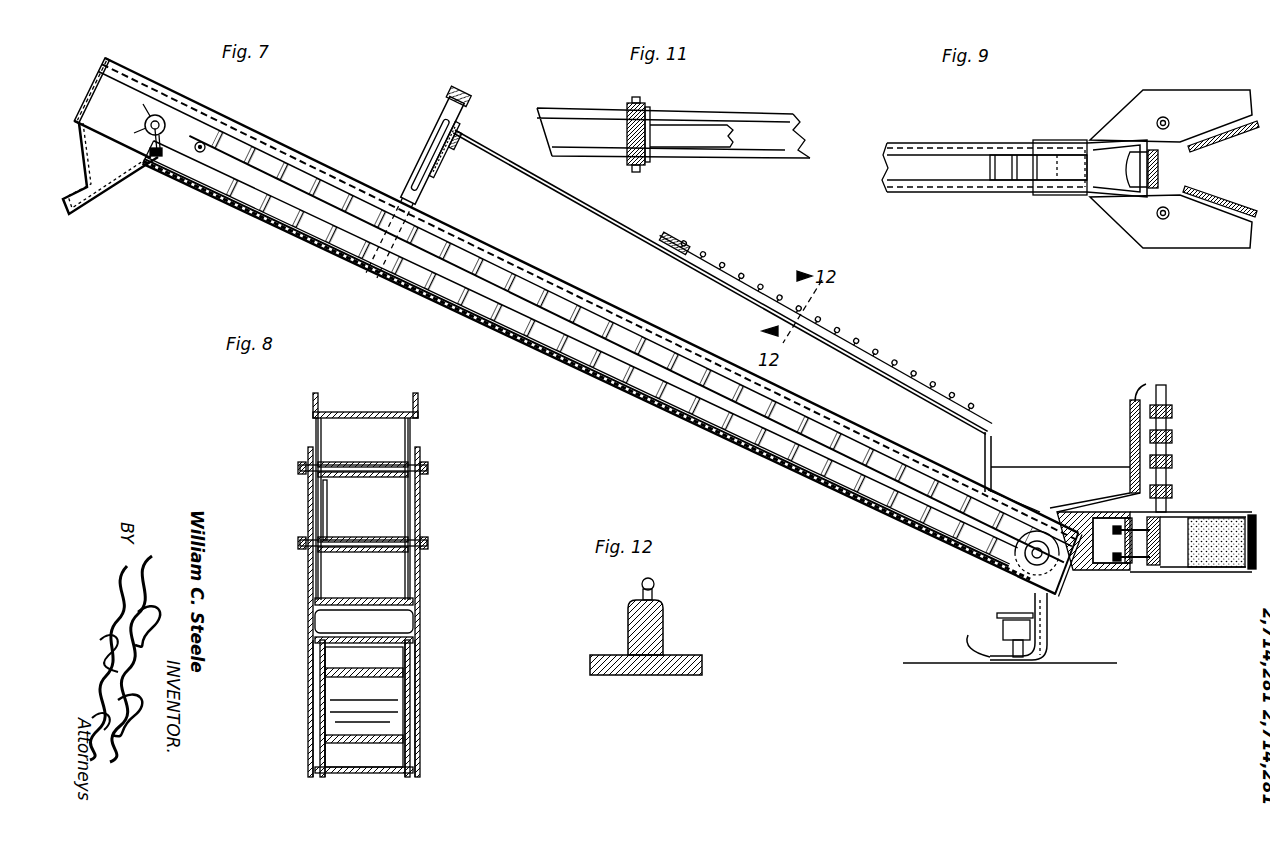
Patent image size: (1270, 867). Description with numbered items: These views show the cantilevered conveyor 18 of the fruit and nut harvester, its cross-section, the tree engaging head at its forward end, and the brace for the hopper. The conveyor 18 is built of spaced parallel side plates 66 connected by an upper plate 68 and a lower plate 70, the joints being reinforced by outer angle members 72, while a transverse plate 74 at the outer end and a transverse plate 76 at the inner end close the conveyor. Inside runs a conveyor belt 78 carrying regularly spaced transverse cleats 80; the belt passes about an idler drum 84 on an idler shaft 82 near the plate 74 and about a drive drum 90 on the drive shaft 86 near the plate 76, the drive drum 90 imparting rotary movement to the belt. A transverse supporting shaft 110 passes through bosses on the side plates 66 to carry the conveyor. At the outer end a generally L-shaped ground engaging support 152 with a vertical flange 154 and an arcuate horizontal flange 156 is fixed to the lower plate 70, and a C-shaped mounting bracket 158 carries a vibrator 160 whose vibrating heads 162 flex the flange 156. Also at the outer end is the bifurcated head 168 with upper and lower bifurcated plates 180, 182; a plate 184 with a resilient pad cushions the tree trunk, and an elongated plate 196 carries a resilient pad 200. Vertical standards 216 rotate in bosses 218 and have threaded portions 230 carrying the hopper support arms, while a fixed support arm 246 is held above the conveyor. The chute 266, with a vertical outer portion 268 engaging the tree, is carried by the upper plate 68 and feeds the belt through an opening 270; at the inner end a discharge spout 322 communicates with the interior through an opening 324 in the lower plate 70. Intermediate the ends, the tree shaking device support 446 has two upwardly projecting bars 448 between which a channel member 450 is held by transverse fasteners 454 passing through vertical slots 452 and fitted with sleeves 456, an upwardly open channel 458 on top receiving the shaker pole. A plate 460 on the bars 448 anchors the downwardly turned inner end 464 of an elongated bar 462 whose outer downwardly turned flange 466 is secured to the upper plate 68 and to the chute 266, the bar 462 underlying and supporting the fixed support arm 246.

In FIG. 7, the conveyor 18 is at (600, 384).
In FIG. 11, the conveyor 18 is at (780, 162).
In FIG. 9, the conveyor 18 is at (925, 197).
In FIG. 8, the side plates 66 is at (308, 700).
In FIG. 7, the upper plate 68 is at (868, 438).
In FIG. 8, the upper plate 68 is at (365, 637).
In FIG. 7, the lower plate 70 is at (862, 512).
In FIG. 8, the lower plate 70 is at (365, 774).
In FIG. 7, the outer angle members 72 is at (830, 414).
In FIG. 8, the outer angle members 72 is at (420, 788).
In FIG. 7, the transverse plate 74 is at (1060, 577).
In FIG. 7, the transverse plate 76 is at (90, 108).
In FIG. 7, the conveyor belt 78 is at (545, 343).
In FIG. 7, the transverse cleats 80 is at (668, 412).
In FIG. 7, the idler shaft 82 is at (1025, 560).
In FIG. 7, the idler drum 84 is at (1025, 548).
In FIG. 7, the drive shaft 86 is at (156, 158).
In FIG. 7, the drive drum 90 is at (146, 118).
In FIG. 7, the transverse supporting shaft 110 is at (206, 150).
In FIG. 7, the ground engaging support 152 is at (1052, 645).
In FIG. 7, the vertical flange 154 is at (1048, 626).
In FIG. 7, the arcuate horizontal flange 156 is at (1000, 660).
In FIG. 7, the mounting bracket 158 is at (1033, 614).
In FIG. 7, the vibrator 160 is at (1003, 630).
In FIG. 7, the vibrating head 162 is at (1020, 658).
In FIG. 9, the bifurcated head 168 is at (1128, 102).
In FIG. 7, the upper bifurcated plate 180 is at (1205, 512).
In FIG. 9, the upper bifurcated plate 180 is at (1190, 95).
In FIG. 7, the lower bifurcated plate 182 is at (1190, 572).
In FIG. 7, the plate 184 is at (1150, 568).
In FIG. 9, the plate 184 is at (1160, 168).
In FIG. 9, the elongated plate 196 is at (1228, 198).
In FIG. 7, the resilient pad 200 is at (1225, 562).
In FIG. 7, the vertical standard 216 is at (1166, 393).
In FIG. 9, the vertical standard 216 is at (1170, 122).
In FIG. 7, the bosses 218 is at (1166, 505).
In FIG. 9, the bosses 218 is at (1157, 121).
In FIG. 7, the externally threaded portions 230 is at (1170, 438).
In FIG. 7, the fixed support arm 246 is at (883, 366).
In FIG. 12, the fixed support arm 246 is at (667, 623).
In FIG. 7, the elongated chute 266 is at (1068, 463).
In FIG. 9, the elongated chute 266 is at (1085, 180).
In FIG. 7, the outer portion 268 is at (1138, 395).
In FIG. 7, the opening 270 is at (1013, 505).
In FIG. 7, the discharge spout 322 is at (110, 208).
In FIG. 7, the opening 324 is at (115, 143).
In FIG. 7, the tree shaking device support 446 is at (430, 138).
In FIG. 8, the tree shaking device support 446 is at (304, 580).
In FIG. 8, the bars 448 is at (308, 500).
In FIG. 8, the channel member 450 is at (363, 598).
In FIG. 7, the vertical slots 452 is at (418, 178).
In FIG. 8, the vertical slots 452 is at (405, 500).
In FIG. 8, the transverse fasteners 454 is at (428, 468).
In FIG. 11, the transverse fasteners 454 is at (637, 172).
In FIG. 8, the sleeves 456 is at (355, 462).
In FIG. 7, the open channel 458 is at (462, 97).
In FIG. 8, the open channel 458 is at (365, 412).
In FIG. 7, the plate 460 is at (440, 160).
In FIG. 8, the plate 460 is at (335, 508).
In FIG. 11, the plate 460 is at (652, 160).
In FIG. 7, the elongated bar 462 is at (609, 222).
In FIG. 11, the elongated bar 462 is at (708, 132).
In FIG. 7, the downwardly turned inner end 464 is at (457, 148).
In FIG. 7, the downwardly turned flange 466 is at (990, 453).